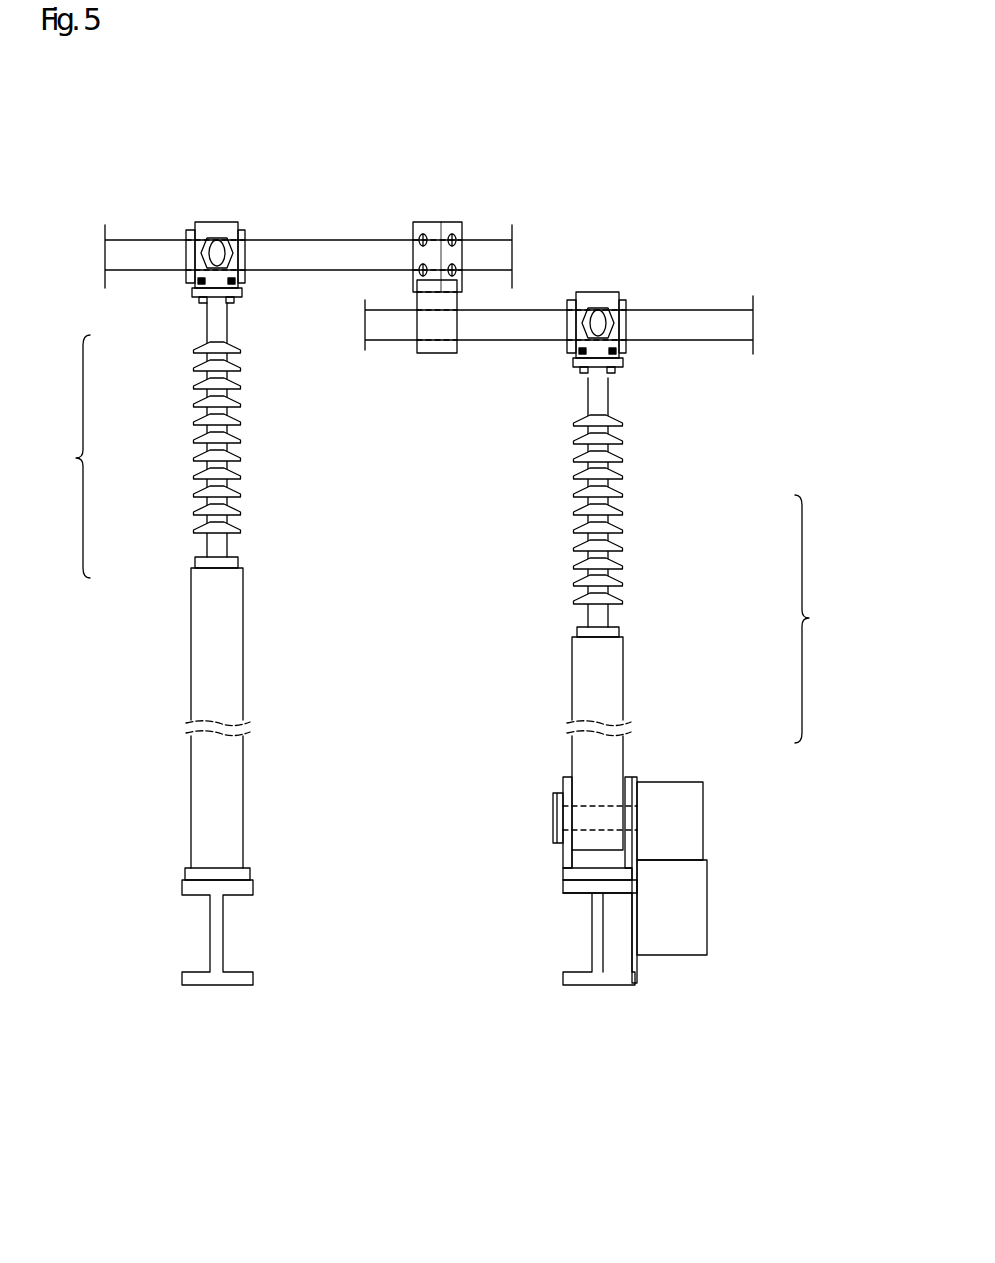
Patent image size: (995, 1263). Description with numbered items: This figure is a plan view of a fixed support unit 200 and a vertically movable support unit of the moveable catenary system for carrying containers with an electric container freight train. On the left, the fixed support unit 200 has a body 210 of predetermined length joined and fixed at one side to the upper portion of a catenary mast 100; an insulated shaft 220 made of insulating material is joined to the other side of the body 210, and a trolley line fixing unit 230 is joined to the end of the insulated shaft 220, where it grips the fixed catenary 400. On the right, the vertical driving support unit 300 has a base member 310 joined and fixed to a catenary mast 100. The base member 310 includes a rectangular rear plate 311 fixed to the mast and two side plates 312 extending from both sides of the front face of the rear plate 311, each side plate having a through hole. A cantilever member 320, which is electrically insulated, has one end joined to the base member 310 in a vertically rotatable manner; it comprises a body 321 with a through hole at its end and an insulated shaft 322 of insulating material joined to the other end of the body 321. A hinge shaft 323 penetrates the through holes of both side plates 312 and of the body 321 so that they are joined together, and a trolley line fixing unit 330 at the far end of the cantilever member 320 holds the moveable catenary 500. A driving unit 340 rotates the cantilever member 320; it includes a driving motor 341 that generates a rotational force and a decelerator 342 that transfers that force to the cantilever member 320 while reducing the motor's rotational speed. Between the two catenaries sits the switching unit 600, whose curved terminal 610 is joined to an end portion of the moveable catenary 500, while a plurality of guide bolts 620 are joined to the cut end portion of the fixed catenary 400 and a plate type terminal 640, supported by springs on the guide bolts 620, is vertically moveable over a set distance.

The catenary mast 100 is at (200, 1008).
The fixed support unit 200 is at (67, 456).
The body 210 is at (175, 600).
The insulated shaft 220 is at (178, 446).
The trolley line fixing unit 230 is at (175, 308).
The vertical driving support unit 300 is at (818, 619).
The base member 310 is at (635, 832).
The rear plate 311 is at (590, 873).
The side plates 312 is at (563, 781).
The cantilever member 320 is at (635, 507).
The body 321 is at (572, 685).
The insulated shaft 322 is at (573, 530).
The hinge shaft 323 is at (590, 830).
The trolley line fixing unit 330 is at (645, 392).
The driving unit 340 is at (712, 827).
The driving motor 341 is at (692, 924).
The decelerator 342 is at (692, 840).
The fixed catenary 400 is at (285, 215).
The moveable catenary 500 is at (686, 288).
The switching unit 600 is at (439, 269).
The curved terminal 610 is at (436, 348).
The guide bolts 620 is at (453, 236).
The plate type terminal 640 is at (441, 222).